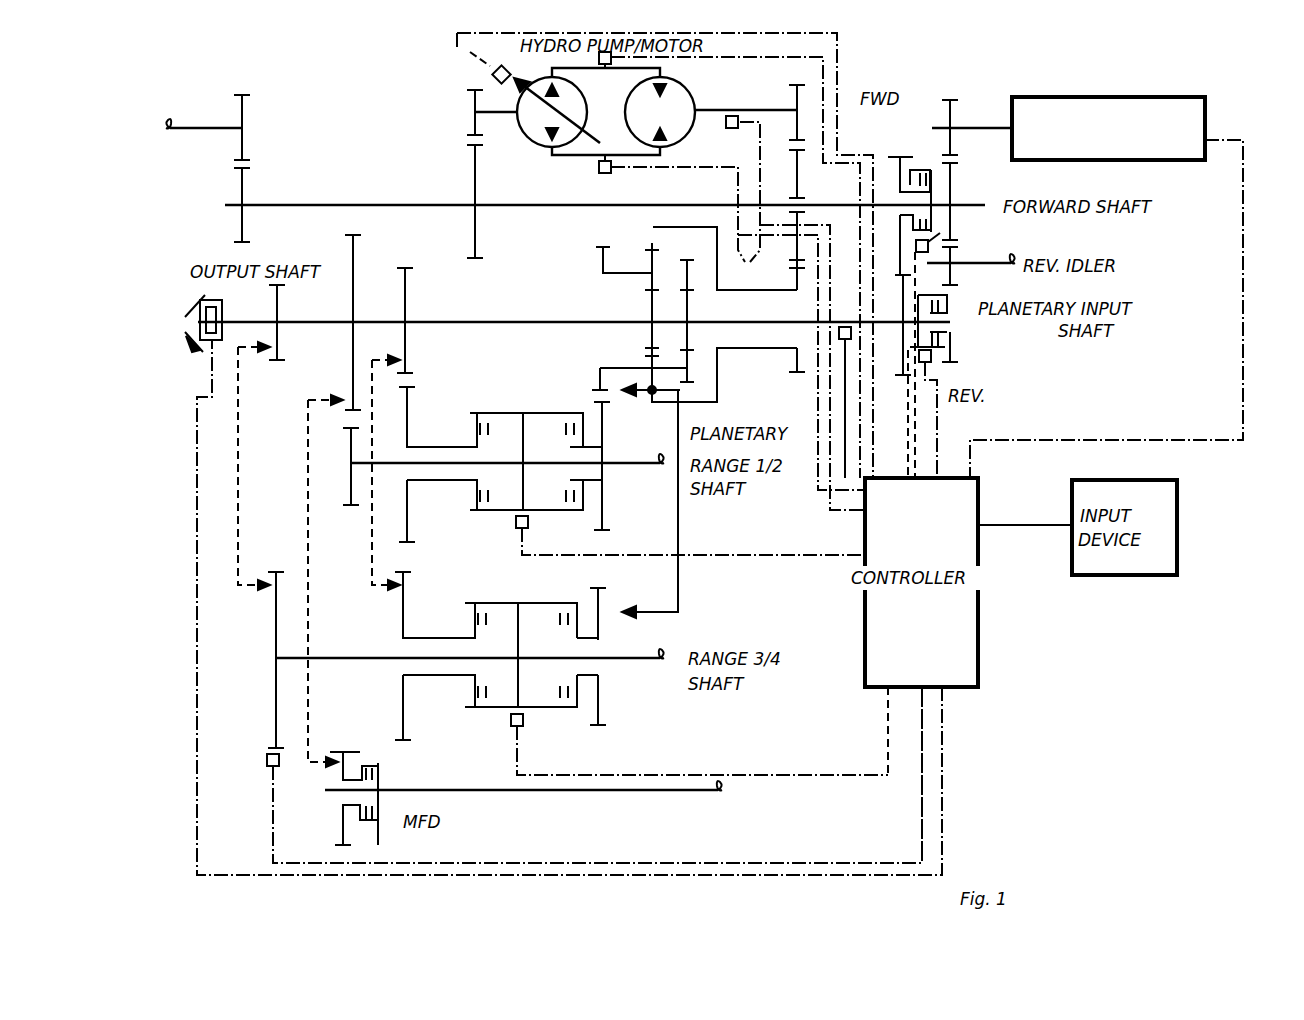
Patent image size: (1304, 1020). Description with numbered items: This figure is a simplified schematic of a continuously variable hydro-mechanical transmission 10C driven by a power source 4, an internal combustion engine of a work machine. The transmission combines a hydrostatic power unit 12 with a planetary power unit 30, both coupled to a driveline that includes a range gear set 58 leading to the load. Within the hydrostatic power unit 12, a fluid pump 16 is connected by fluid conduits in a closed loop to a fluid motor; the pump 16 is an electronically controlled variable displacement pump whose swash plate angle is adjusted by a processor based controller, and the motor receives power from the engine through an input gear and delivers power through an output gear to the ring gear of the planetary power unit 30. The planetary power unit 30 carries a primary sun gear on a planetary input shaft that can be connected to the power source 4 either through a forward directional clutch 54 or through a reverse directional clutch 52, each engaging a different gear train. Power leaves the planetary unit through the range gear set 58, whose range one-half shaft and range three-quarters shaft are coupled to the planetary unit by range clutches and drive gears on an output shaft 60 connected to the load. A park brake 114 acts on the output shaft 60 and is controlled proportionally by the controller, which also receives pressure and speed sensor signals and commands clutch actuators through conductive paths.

The continuously variable hydro-mechanical transmission 10C is at (998, 58).
The power source 4 is at (1207, 117).
The hydrostatic power unit 12 is at (452, 60).
The fluid pump 16 is at (528, 142).
The planetary power unit 30 is at (550, 336).
The reverse directional clutch 52 is at (947, 338).
The forward directional clutch 54 is at (920, 172).
The range gear set 58 is at (728, 584).
The output shaft 60 is at (318, 332).
The park brake 114 is at (222, 313).